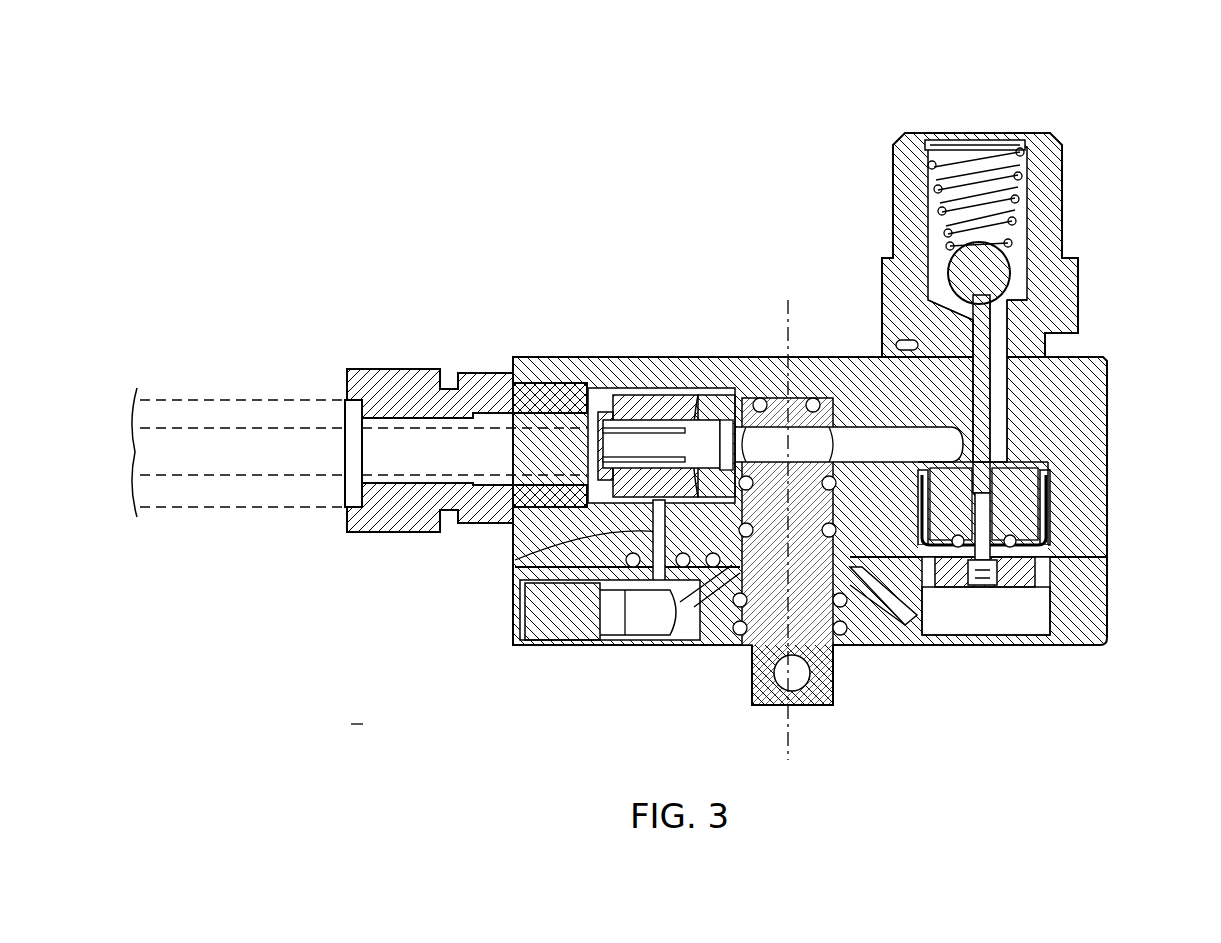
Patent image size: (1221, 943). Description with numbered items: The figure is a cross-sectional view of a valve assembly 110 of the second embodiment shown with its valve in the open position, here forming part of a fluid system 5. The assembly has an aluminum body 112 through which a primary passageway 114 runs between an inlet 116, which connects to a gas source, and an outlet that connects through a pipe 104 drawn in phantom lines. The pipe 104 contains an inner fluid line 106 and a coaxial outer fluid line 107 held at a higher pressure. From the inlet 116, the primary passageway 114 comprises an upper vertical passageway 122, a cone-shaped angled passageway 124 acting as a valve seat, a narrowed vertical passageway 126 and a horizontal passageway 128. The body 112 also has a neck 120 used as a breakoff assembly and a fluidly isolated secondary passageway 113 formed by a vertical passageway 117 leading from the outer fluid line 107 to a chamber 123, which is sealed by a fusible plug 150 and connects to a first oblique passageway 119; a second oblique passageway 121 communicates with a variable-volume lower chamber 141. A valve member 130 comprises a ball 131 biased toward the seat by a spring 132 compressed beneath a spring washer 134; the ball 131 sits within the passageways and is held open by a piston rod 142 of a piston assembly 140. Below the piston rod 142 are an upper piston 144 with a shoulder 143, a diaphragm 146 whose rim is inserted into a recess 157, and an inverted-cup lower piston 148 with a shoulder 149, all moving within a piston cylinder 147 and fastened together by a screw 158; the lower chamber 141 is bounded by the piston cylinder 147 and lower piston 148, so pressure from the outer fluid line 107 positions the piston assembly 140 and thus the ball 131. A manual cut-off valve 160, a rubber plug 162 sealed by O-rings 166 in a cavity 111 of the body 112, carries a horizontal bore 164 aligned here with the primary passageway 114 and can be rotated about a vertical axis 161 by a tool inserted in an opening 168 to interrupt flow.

The fluid system 5 is at (357, 715).
The pipe 104 is at (233, 380).
The inner fluid line 106 is at (244, 470).
The outer fluid line 107 is at (298, 410).
The valve assembly 110 is at (839, 407).
The cavity 111 is at (712, 395).
The body 112 is at (640, 382).
The secondary passageway 113 is at (708, 600).
The primary passageway 114 is at (865, 435).
The inlet 116 is at (978, 135).
The vertical passageway 117 is at (515, 558).
The first oblique passageway 119 is at (695, 602).
The neck 120 is at (908, 345).
The second oblique passageway 121 is at (908, 624).
The upper vertical passageway 122 is at (1017, 248).
The chamber 123 is at (645, 620).
The angled passageway 124 is at (1005, 310).
The narrowed vertical passageway 126 is at (1000, 417).
The horizontal passageway 128 is at (885, 590).
The valve member 130 is at (1115, 190).
The ball 131 is at (1000, 272).
The spring 132 is at (1022, 195).
The spring washer 134 is at (1025, 147).
The piston assembly 140 is at (1065, 430).
The lower chamber 141 is at (1030, 615).
The piston rod 142 is at (985, 387).
The shoulder 143 is at (1050, 480).
The upper piston 144 is at (1000, 480).
The diaphragm 146 is at (1048, 522).
The piston cylinder 147 is at (1045, 497).
The lower piston 148 is at (1030, 570).
The shoulder 149 is at (1050, 590).
The fusible plug 150 is at (530, 620).
The recess 157 is at (1078, 550).
The screw 158 is at (985, 548).
The manual cut-off valve 160 is at (770, 690).
The vertical axis 161 is at (785, 305).
The rubber plug 162 is at (833, 655).
The horizontal bore 164 is at (780, 438).
The O-rings 166 is at (845, 606).
The opening 168 is at (803, 690).